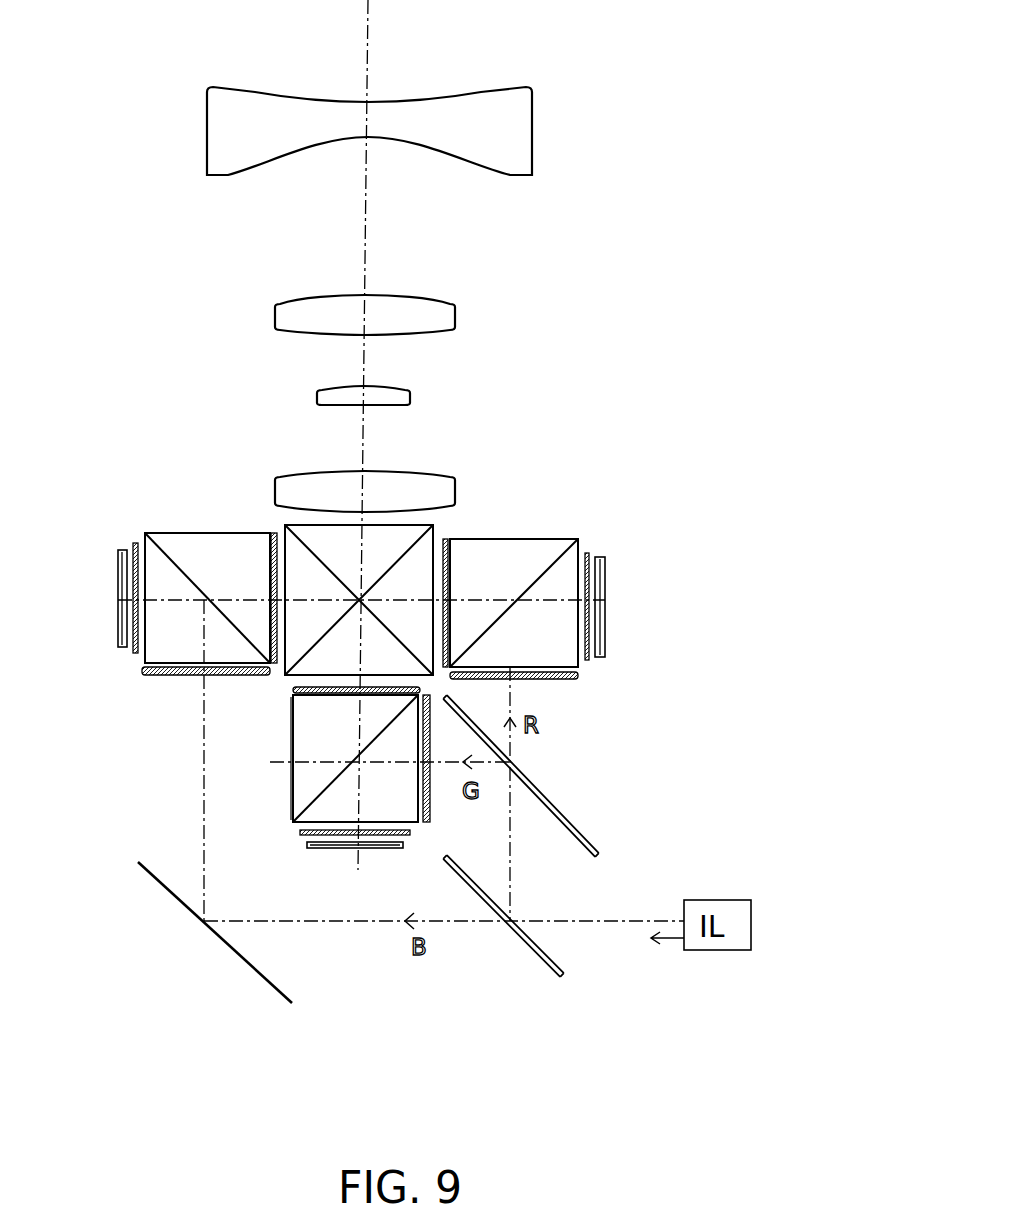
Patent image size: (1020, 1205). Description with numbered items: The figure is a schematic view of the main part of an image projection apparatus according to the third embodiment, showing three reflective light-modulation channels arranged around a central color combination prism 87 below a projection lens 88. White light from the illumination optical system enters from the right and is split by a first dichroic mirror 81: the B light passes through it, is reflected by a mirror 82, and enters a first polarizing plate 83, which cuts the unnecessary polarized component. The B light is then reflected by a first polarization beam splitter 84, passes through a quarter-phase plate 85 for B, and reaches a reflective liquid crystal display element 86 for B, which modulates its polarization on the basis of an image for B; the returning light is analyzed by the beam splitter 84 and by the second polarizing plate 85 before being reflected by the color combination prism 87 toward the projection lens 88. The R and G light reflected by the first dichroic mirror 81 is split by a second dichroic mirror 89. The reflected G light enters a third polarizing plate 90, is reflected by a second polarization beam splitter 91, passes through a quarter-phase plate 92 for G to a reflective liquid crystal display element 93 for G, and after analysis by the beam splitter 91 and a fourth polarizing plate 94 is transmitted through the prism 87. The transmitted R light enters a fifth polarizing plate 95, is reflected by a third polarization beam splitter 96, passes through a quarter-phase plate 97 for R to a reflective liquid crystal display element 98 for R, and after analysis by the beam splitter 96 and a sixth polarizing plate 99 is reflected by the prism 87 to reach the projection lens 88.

The first dichroic mirror 81 is at (562, 975).
The mirror 82 is at (292, 1003).
The first polarizing plate 83 is at (165, 678).
The first polarization beam splitter 84 is at (182, 541).
The quarter-phase plate for B 85 is at (272, 535).
The reflective liquid crystal display element for B 86 is at (120, 618).
The color combination prism 87 is at (425, 553).
The projection lens 88 is at (445, 512).
The second dichroic mirror 89 is at (598, 850).
The third polarizing plate 90 is at (432, 823).
The second polarization beam splitter 91 is at (295, 800).
The quarter-phase plate for G 92 is at (300, 833).
The reflective liquid crystal display element for G 93 is at (357, 862).
The fourth polarizing plate 94 is at (290, 690).
The fifth polarizing plate 95 is at (585, 678).
The third polarization beam splitter 96 is at (540, 550).
The quarter-phase plate for R 97 is at (590, 553).
The reflective liquid crystal display element for R 98 is at (605, 556).
The sixth polarizing plate 99 is at (455, 567).